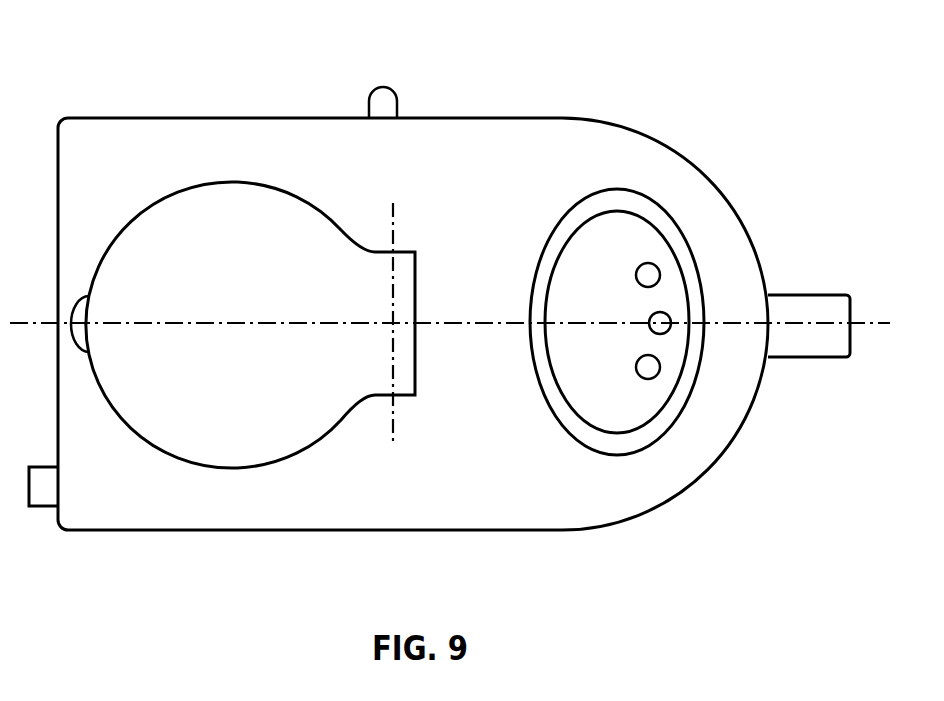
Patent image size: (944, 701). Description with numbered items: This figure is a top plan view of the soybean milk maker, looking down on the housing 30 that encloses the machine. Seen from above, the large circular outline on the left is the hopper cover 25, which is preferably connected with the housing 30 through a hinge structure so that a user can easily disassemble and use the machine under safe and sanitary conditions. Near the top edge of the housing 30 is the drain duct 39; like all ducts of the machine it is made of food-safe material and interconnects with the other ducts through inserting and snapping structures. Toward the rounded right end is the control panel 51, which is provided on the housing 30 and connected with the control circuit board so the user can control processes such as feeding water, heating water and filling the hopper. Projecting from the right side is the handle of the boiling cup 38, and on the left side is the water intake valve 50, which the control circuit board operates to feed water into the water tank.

The water intake valve 50 is at (43, 485).
The housing 30 is at (146, 118).
The hopper cover 25 is at (256, 305).
The drain duct 39 is at (383, 100).
The control panel 51 is at (584, 307).
The handle of the boiling cup 38 is at (786, 307).